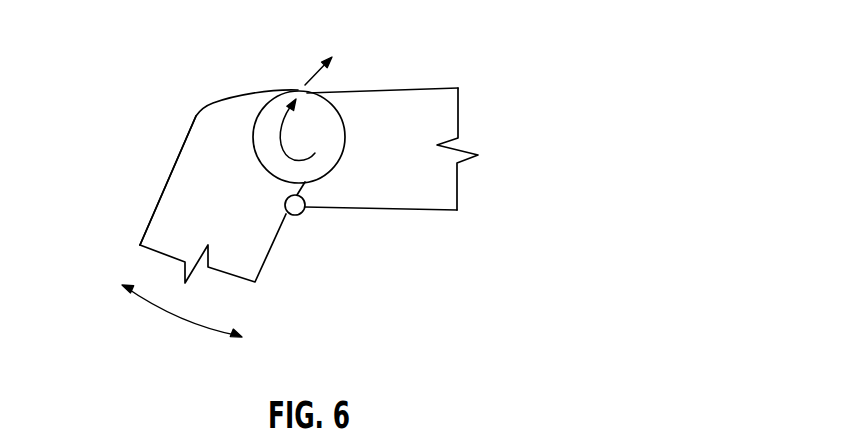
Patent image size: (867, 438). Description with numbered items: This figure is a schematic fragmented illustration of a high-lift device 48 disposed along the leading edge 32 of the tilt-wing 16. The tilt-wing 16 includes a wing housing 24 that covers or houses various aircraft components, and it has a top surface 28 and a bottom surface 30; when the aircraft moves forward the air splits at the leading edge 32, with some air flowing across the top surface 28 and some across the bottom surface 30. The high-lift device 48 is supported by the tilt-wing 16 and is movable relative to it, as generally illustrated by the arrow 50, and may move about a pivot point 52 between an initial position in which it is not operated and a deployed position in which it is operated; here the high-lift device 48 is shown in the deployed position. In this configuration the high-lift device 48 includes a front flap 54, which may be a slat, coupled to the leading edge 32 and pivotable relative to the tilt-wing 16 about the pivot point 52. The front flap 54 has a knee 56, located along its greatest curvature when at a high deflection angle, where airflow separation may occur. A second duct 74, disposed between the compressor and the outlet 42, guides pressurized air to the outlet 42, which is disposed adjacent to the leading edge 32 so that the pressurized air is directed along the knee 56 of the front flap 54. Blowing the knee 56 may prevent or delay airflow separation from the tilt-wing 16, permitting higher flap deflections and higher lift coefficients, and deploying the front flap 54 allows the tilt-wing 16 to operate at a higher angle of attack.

The tilt-wing 16 is at (492, 64).
The wing housing 24 is at (458, 190).
The top surface 28 is at (402, 87).
The bottom surface 30 is at (398, 212).
The leading edge 32 is at (130, 162).
The outlet 42 is at (295, 81).
The high-lift device 48 is at (118, 180).
The front flap 54 is at (144, 228).
The arrow 50 is at (180, 320).
The pivot point 52 is at (305, 209).
The knee 56 is at (205, 94).
The second duct 74 is at (345, 135).